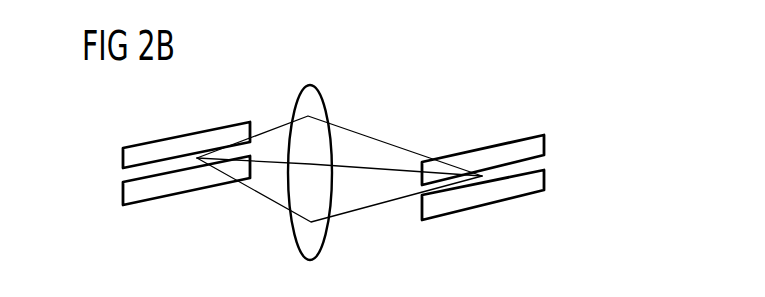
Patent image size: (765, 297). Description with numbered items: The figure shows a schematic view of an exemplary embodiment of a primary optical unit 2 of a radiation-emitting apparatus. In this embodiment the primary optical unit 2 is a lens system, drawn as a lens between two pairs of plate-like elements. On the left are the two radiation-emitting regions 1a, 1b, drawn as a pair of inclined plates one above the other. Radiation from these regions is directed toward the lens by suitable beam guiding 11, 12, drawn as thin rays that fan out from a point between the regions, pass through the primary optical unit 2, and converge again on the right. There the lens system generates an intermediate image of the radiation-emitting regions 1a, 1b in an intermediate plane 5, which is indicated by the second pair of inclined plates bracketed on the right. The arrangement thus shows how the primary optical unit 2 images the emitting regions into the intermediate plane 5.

The radiation-emitting region 1a is at (152, 153).
The radiation-emitting region 1b is at (163, 190).
The beam guiding 11 is at (272, 130).
The beam guiding 12 is at (267, 198).
The primary optical unit 2 is at (320, 103).
The intermediate plane 5 is at (552, 128).